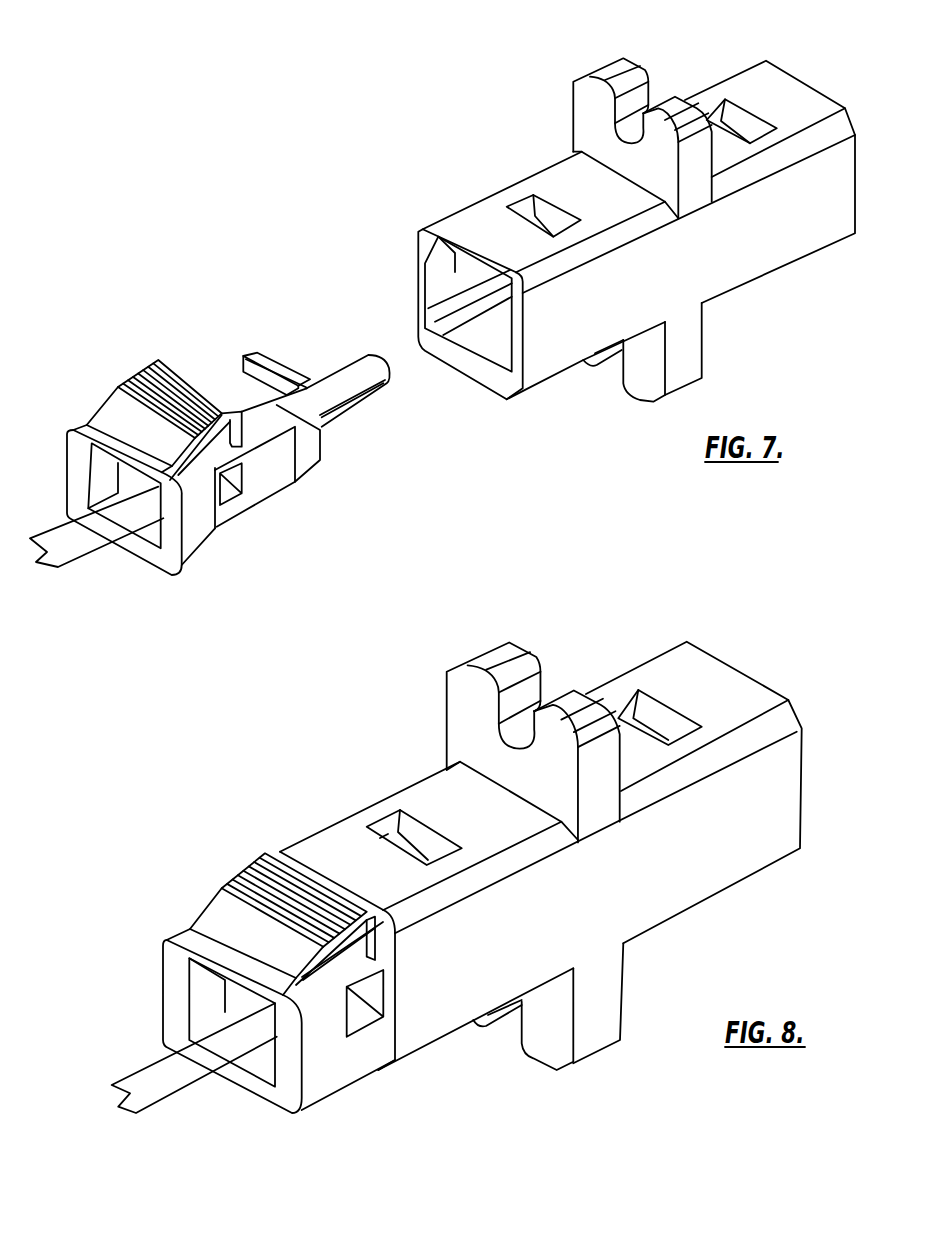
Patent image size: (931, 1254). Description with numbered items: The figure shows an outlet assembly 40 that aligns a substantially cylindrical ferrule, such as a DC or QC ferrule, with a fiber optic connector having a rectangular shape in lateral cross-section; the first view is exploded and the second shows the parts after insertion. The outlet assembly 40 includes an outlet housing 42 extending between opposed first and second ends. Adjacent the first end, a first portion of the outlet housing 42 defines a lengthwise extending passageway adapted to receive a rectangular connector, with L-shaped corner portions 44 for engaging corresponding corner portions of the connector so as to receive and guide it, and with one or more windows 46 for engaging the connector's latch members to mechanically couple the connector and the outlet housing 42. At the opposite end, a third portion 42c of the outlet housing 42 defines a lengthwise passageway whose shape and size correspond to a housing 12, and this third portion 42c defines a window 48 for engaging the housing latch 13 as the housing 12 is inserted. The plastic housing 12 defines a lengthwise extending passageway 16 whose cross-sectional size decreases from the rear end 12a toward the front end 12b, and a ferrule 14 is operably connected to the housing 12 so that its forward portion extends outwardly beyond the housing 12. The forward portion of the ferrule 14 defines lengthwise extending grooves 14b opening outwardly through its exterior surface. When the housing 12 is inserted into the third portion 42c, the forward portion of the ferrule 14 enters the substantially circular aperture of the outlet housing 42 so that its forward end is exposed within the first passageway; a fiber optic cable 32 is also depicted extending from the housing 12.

In FIG. 7, the housing 12 is at (280, 473).
In FIG. 8, the housing 12 is at (322, 1070).
In FIG. 7, the rear end of the housing 12a is at (167, 557).
In FIG. 8, the rear end of the housing 12a is at (283, 1100).
In FIG. 7, the front end of the housing 12b is at (323, 437).
In FIG. 7, the latch 13 is at (237, 378).
In FIG. 8, the latch 13 is at (383, 836).
In FIG. 7, the ferrule 14 is at (338, 377).
In FIG. 7, the lengthwise extending grooves 14b is at (390, 383).
In FIG. 7, the lengthwise extending passageway 16 is at (100, 467).
In FIG. 8, the lengthwise extending passageway 16 is at (207, 987).
In FIG. 7, the fiber optic cable 32 is at (85, 537).
In FIG. 8, the fiber optic cable 32 is at (158, 1077).
In FIG. 7, the outlet assembly 40 is at (450, 135).
In FIG. 8, the outlet assembly 40 is at (405, 680).
In FIG. 7, the outlet housing 42 is at (733, 265).
In FIG. 8, the outlet housing 42 is at (657, 665).
In FIG. 7, the third portion 42c is at (480, 337).
In FIG. 7, the L-shaped corner portions 44 is at (428, 317).
In FIG. 7, the windows 46 is at (740, 113).
In FIG. 8, the windows 46 is at (678, 720).
In FIG. 7, the window 48 is at (543, 215).
In FIG. 8, the window 48 is at (420, 833).